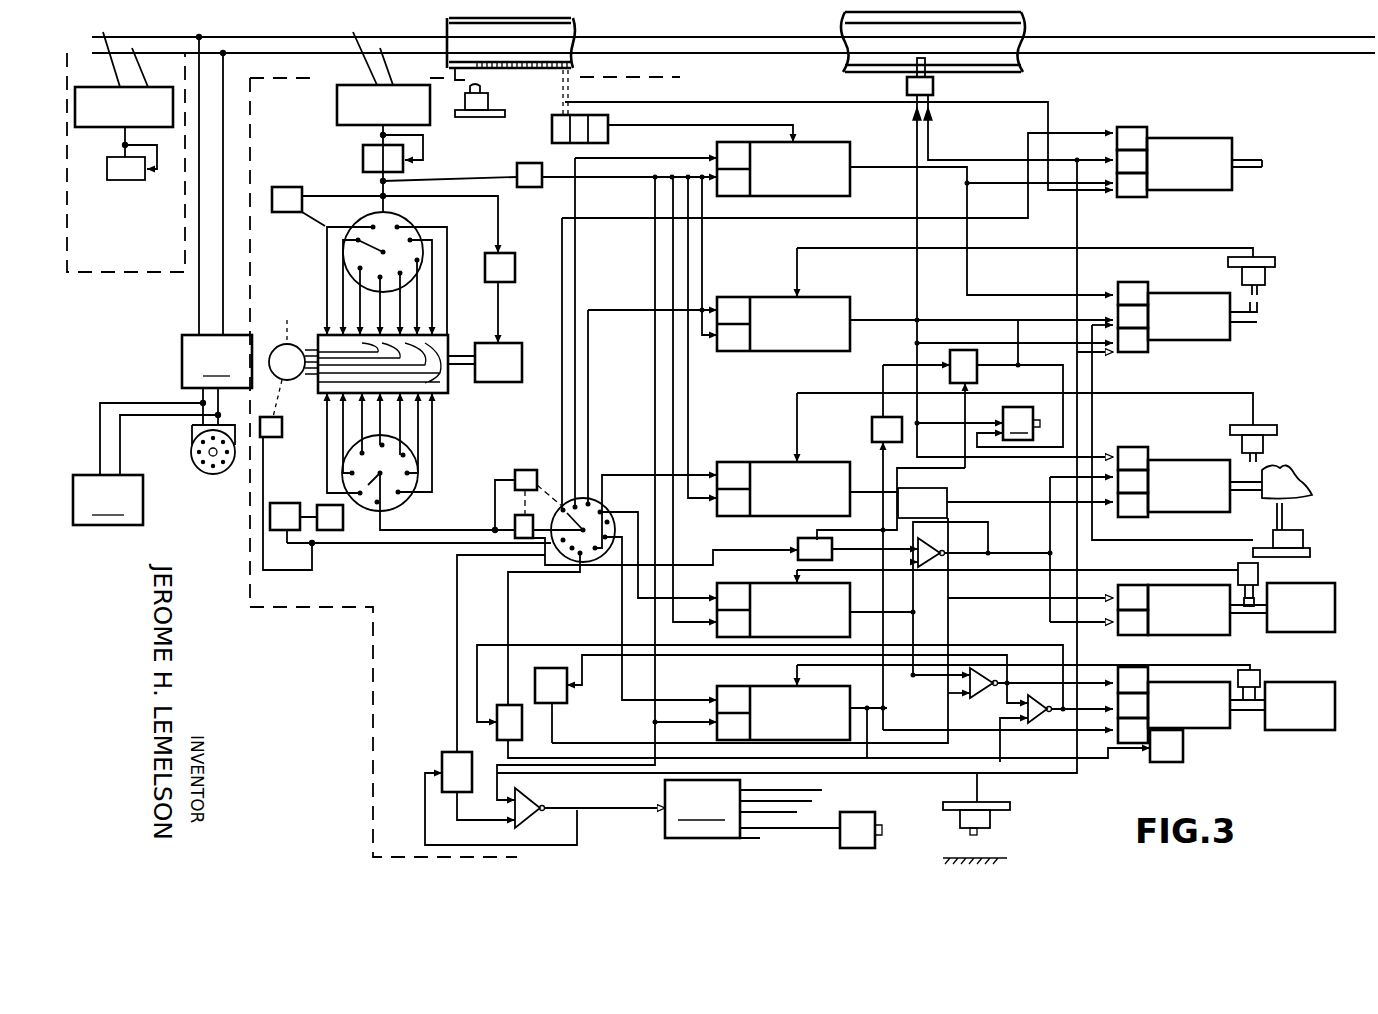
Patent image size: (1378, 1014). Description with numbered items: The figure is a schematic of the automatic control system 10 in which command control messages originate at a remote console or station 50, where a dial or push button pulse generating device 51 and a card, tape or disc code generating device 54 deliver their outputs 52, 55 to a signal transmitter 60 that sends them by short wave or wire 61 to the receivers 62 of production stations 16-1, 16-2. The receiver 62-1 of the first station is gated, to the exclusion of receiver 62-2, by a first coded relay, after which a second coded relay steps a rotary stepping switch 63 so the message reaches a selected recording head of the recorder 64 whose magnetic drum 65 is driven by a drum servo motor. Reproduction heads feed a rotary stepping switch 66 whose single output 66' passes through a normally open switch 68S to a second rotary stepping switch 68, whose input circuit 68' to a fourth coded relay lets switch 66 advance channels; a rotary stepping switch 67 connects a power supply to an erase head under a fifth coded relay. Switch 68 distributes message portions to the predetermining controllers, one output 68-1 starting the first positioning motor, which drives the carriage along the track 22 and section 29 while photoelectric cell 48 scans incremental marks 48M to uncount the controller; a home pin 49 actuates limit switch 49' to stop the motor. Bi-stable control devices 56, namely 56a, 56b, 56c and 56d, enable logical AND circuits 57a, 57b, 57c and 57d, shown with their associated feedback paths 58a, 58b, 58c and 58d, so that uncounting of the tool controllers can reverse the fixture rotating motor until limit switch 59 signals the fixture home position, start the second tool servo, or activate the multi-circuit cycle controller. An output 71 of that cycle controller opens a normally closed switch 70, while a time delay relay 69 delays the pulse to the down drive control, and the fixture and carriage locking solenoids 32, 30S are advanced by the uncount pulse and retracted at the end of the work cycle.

The automatic production system 10 is at (337, 703).
The station 16-1 is at (337, 605).
The power operative production device 16-2 is at (100, 268).
The track 22 is at (575, 30).
The track section 29 is at (1123, 46).
The carriage locking solenoid 30S is at (932, 100).
The fixture locking solenoid 32 is at (940, 627).
The photoelectric cell 48 is at (550, 140).
The incremental marks 48M is at (575, 65).
The home position locator pin 49 is at (450, 81).
The limit switch 49' is at (470, 117).
The station 50 is at (205, 517).
The digital pulse train generating device 51 is at (205, 470).
The output 52 is at (200, 395).
The code generating device 54 is at (108, 500).
The output 55 is at (120, 450).
The control devices 56 is at (790, 559).
The control element 56a is at (798, 545).
The control switch 56b is at (567, 702).
The control element 56c is at (522, 728).
The control switch 56d is at (443, 758).
The AND switching circuit 57a is at (935, 548).
The AND switching circuit 57b is at (978, 668).
The AND switching circuit 57c is at (1036, 726).
The AND switching circuit 57d is at (535, 801).
The feedback circuit 58a is at (832, 615).
The feedback circuit 58b is at (925, 648).
The feedback circuit 58c is at (500, 645).
The feedback circuit 58d is at (535, 845).
The limit switch 59 is at (1313, 525).
The signal transmitter 60 is at (217, 380).
The wire 61 is at (196, 301).
The receivers 62 is at (98, 86).
The receiver 62-1 is at (383, 122).
The receiver 62-2 is at (124, 100).
The rotary stepping switch 63 is at (400, 222).
The recorder 64 is at (306, 284).
The magnetic recording drum 65 is at (450, 386).
The rotary stepping switch 66 is at (421, 463).
The output 66' is at (456, 516).
The rotary stepping switch 67 is at (277, 347).
The rotary stepping switch 68 is at (598, 525).
The input circuit 68' is at (381, 556).
The output 68-1 is at (785, 220).
The normally open switch 68S is at (518, 540).
The time delay relay 69 is at (870, 430).
The normally closed switch 70 is at (980, 376).
The output 71 is at (770, 832).